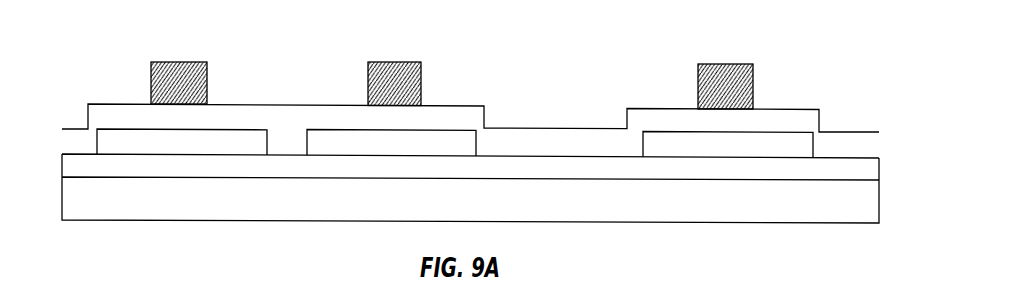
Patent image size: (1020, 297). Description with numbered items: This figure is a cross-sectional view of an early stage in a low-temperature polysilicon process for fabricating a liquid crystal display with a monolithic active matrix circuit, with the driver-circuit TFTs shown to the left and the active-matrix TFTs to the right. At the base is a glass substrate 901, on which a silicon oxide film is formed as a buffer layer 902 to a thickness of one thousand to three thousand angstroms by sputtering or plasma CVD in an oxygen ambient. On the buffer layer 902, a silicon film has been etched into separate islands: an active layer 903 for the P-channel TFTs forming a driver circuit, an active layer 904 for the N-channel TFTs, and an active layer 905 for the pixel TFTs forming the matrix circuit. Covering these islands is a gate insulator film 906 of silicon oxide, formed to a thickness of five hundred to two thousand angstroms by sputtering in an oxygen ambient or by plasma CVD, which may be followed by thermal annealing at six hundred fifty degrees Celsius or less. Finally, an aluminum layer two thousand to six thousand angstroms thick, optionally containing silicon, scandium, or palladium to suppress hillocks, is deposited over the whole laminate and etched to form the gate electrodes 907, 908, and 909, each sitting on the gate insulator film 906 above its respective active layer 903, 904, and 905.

The glass substrate 901 is at (738, 208).
The buffer layer 902 is at (279, 165).
The active layer 903 is at (209, 140).
The active layer 904 is at (392, 142).
The active layer 905 is at (728, 145).
The gate insulator film 906 is at (520, 139).
The gate electrode 907 is at (175, 70).
The gate electrode 908 is at (388, 70).
The gate electrode 909 is at (727, 87).